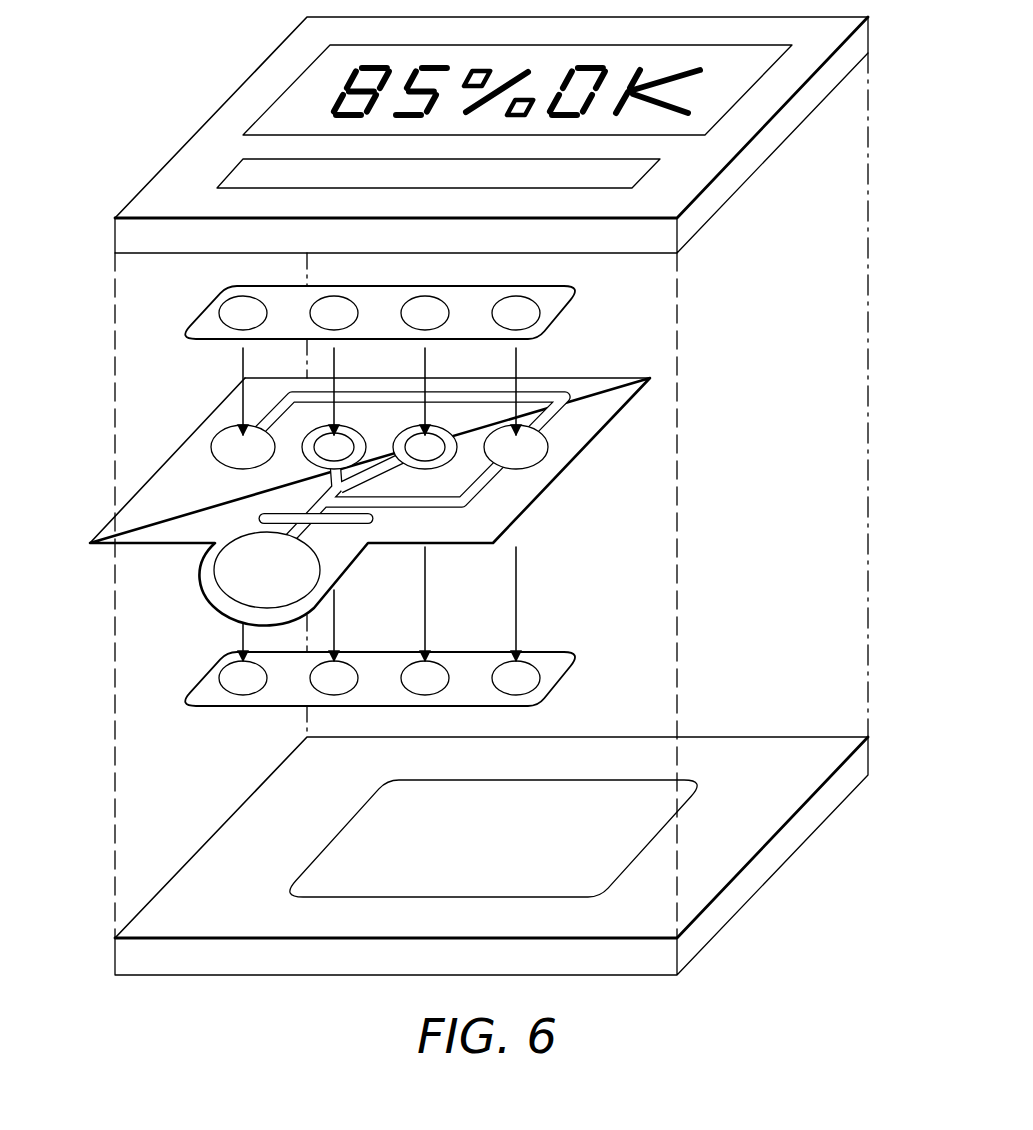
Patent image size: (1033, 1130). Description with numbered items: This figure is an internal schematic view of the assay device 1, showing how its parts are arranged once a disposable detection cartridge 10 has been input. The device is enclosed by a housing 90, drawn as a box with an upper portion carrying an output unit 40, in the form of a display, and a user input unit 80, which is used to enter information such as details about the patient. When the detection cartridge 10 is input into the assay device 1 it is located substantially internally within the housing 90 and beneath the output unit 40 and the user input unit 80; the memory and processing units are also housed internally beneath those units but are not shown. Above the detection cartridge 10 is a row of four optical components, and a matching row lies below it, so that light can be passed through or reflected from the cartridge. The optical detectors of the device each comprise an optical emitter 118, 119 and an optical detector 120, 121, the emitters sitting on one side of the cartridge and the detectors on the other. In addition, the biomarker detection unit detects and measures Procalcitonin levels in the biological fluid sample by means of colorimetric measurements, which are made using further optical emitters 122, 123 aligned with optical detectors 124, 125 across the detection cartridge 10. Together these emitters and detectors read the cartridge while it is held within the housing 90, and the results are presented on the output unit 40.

The assay device 1 is at (80, 331).
The detection cartridge 10 is at (540, 494).
The output unit 40 is at (303, 70).
The user input unit 80 is at (229, 177).
The housing 90 is at (868, 131).
The optical emitter 118 is at (547, 313).
The optical emitter 119 is at (223, 331).
The optical detector 120 is at (540, 670).
The optical detector 121 is at (223, 699).
The optical emitter 122 is at (441, 326).
The optical emitter 123 is at (348, 328).
The optical detector 124 is at (441, 665).
The optical detector 125 is at (340, 701).